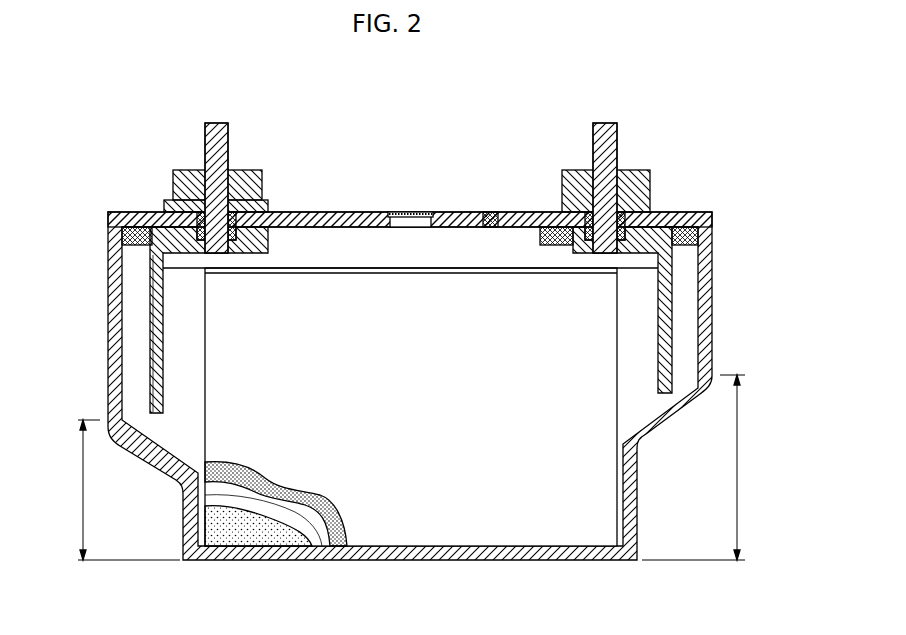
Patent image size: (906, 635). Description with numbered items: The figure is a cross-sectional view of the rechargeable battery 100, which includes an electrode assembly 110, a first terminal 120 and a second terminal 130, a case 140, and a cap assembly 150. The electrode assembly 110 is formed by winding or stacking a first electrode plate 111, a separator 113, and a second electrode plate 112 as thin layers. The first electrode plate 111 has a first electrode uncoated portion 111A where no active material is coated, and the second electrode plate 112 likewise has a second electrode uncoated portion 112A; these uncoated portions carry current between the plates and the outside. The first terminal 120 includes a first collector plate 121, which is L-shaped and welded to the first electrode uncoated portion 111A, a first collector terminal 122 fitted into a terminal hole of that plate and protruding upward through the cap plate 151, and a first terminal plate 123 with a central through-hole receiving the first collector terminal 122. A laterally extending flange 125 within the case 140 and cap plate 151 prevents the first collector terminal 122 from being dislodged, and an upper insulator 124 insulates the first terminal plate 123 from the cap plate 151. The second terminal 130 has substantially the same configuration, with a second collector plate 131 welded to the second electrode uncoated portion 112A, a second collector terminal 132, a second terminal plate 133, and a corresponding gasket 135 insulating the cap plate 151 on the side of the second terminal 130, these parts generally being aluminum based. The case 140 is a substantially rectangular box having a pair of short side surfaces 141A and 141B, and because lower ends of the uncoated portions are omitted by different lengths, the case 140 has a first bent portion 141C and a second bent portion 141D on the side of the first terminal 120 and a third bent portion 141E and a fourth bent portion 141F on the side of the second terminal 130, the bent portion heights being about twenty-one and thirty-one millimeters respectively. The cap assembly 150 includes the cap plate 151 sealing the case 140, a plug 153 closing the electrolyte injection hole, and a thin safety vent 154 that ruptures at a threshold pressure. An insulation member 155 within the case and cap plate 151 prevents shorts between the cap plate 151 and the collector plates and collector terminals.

The battery 100 is at (84, 63).
The electrode assembly 110 is at (410, 434).
The first electrode plate 111 is at (230, 540).
The first electrode uncoated portion 111A is at (180, 368).
The second electrode plate 112 is at (341, 547).
The second electrode uncoated portion 112A is at (650, 356).
The separator 113 is at (320, 540).
The first terminal 120 is at (162, 238).
The first collector plate 121 is at (152, 290).
The first collector terminal 122 is at (222, 142).
The first terminal plate 123 is at (179, 170).
The upper insulator 124 is at (164, 203).
The flange 125 is at (135, 232).
The second terminal 130 is at (662, 228).
The second collector plate 131 is at (666, 272).
The second collector terminal 132 is at (620, 143).
The second terminal plate 133 is at (642, 186).
The second gasket 135 is at (700, 214).
The case 140 is at (716, 305).
The short side surface 141A is at (115, 323).
The short side surface 141B is at (708, 326).
The first bent portion 141C is at (183, 535).
The second bent portion 141D is at (155, 464).
The third bent portion 141E is at (638, 512).
The fourth bent portion 141F is at (665, 428).
The cap assembly 150 is at (410, 156).
The cap plate 151 is at (351, 212).
The plug 153 is at (490, 212).
The safety vent 154 is at (424, 212).
The insulation member 155 is at (690, 237).